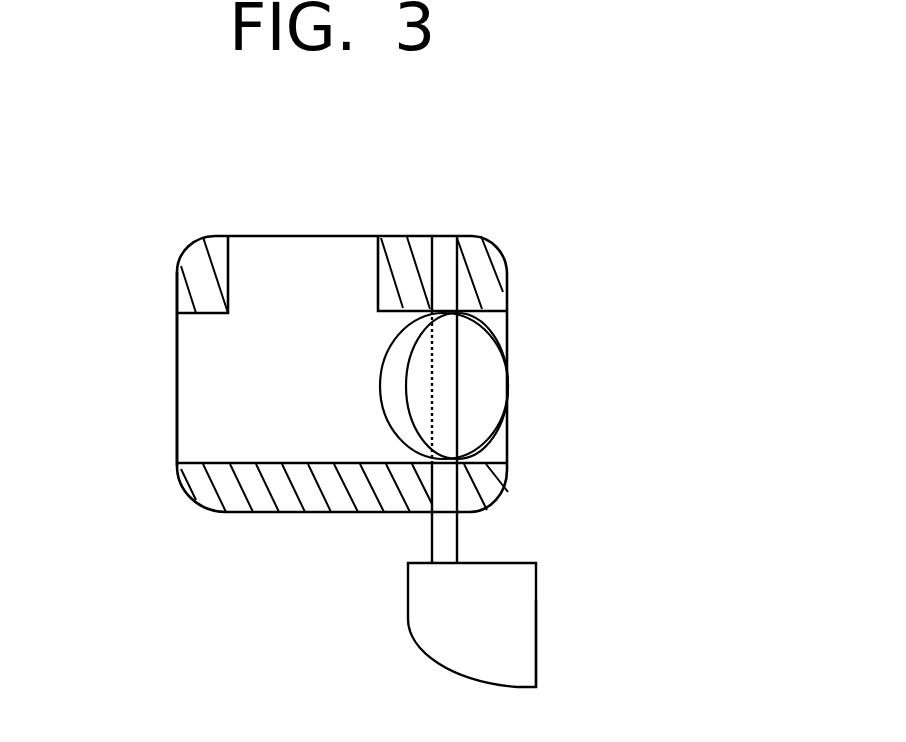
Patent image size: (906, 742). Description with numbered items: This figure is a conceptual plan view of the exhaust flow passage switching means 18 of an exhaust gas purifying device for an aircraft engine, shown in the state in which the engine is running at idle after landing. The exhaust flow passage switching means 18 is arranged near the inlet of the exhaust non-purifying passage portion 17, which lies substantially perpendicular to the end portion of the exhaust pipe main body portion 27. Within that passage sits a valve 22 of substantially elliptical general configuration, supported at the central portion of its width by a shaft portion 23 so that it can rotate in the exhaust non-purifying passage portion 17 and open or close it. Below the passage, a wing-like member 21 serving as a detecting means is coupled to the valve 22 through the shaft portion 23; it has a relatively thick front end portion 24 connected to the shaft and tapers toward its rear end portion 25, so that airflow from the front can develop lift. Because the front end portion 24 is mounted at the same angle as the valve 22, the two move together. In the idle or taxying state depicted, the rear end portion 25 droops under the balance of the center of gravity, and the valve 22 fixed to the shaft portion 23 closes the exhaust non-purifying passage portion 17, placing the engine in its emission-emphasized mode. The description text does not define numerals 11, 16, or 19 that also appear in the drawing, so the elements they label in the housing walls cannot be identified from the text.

The bottom wall of housing 11 is at (232, 515).
The housing 16 is at (152, 438).
The exhaust non-purifying passage portion 17 is at (508, 434).
The exhaust flow passage switching means 18 is at (655, 248).
The side wall of housing 19 is at (177, 352).
The wing-like member 21 is at (642, 581).
The valve 22 is at (500, 326).
The shaft portion 23 is at (458, 520).
The front end portion 24 is at (408, 618).
The rear end portion 25 is at (536, 650).
The exhaust pipe main body portion 27 is at (315, 236).